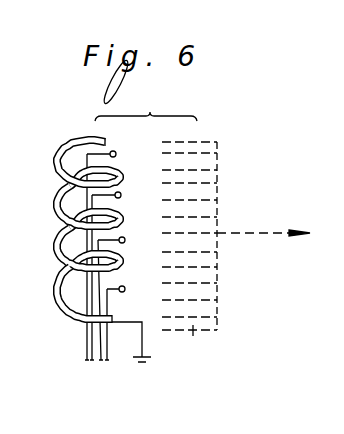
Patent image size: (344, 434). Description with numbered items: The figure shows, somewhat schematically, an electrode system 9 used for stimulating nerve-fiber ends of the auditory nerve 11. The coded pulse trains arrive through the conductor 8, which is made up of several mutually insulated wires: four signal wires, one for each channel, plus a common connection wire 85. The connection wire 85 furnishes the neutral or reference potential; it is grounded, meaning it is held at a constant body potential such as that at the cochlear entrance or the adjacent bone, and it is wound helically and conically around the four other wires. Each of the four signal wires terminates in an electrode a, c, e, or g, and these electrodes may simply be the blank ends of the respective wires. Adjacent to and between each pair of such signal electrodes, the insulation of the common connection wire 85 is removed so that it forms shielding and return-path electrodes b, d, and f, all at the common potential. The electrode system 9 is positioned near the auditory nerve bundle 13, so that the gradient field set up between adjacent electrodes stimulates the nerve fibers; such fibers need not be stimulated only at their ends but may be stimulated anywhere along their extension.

The conductor 8 is at (86, 343).
The electrode system 9 is at (50, 258).
The auditory nerve 11 is at (250, 234).
The auditory nerve bundle 13 is at (193, 336).
The common connection wire 85 is at (147, 363).
The electrode a is at (117, 153).
The shielding and return-path electrode b is at (124, 176).
The electrode c is at (122, 195).
The shielding and return-path electrode d is at (124, 218).
The electrode e is at (126, 239).
The shielding and return-path electrode f is at (125, 262).
The electrode g is at (126, 288).